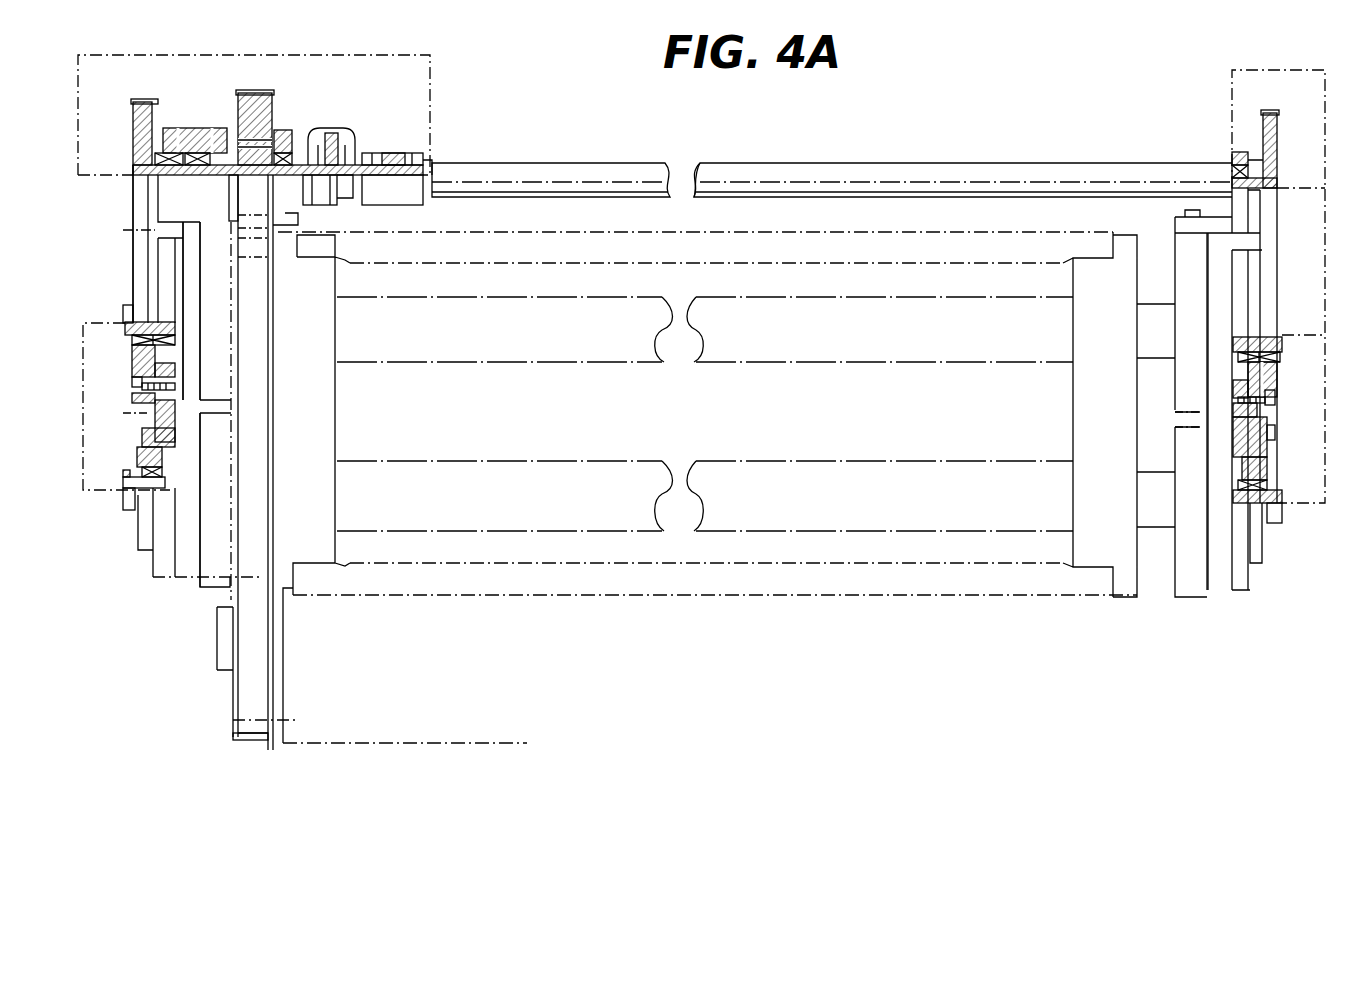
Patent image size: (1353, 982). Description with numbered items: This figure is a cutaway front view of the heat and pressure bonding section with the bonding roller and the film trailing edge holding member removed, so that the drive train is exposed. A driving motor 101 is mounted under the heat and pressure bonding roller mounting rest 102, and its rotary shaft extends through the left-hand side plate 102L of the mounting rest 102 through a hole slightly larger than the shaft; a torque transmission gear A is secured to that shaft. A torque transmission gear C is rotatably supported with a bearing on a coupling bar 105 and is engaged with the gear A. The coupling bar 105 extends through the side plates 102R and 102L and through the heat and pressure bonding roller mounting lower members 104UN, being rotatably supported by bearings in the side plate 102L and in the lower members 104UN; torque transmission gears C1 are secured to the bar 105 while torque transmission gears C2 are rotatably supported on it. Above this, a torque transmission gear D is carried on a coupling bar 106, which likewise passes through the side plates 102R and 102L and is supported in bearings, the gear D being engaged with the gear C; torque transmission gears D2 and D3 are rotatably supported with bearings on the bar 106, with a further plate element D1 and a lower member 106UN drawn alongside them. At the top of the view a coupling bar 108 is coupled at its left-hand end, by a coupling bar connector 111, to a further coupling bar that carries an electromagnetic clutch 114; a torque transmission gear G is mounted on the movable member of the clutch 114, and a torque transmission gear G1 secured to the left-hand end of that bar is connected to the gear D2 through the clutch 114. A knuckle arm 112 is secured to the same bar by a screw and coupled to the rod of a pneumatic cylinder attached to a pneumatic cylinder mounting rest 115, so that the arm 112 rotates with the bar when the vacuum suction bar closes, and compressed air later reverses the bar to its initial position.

The driving motor 101 is at (233, 724).
The heat and pressure bonding roller mounting rest 102 is at (913, 250).
The left-hand side plate 102L is at (313, 550).
The right-hand side plate 102R is at (1123, 572).
The heat and pressure bonding roller mounting lower member 104UN is at (210, 577).
The coupling bar 105 is at (547, 520).
The coupling bar 106 is at (642, 332).
The unit guide plate 106UN is at (1200, 298).
The coupling bar 108 is at (608, 165).
The coupling bar connector 111 is at (403, 153).
The knuckle arm 112 is at (362, 118).
The electromagnetic clutch 114 is at (197, 128).
The pneumatic cylinder mounting rest 115 is at (292, 130).
The torque transmission gear A is at (240, 703).
The torque transmission gear C is at (257, 462).
The torque transmission gear C1 is at (163, 555).
The torque transmission gear C2 is at (143, 520).
The torque transmission gear D is at (258, 375).
The plate D1 is at (193, 332).
The torque transmission gear D2 is at (165, 257).
The torque transmission gear D3 is at (137, 283).
The torque transmission gear G is at (278, 101).
The torque transmission gear G1 is at (137, 100).